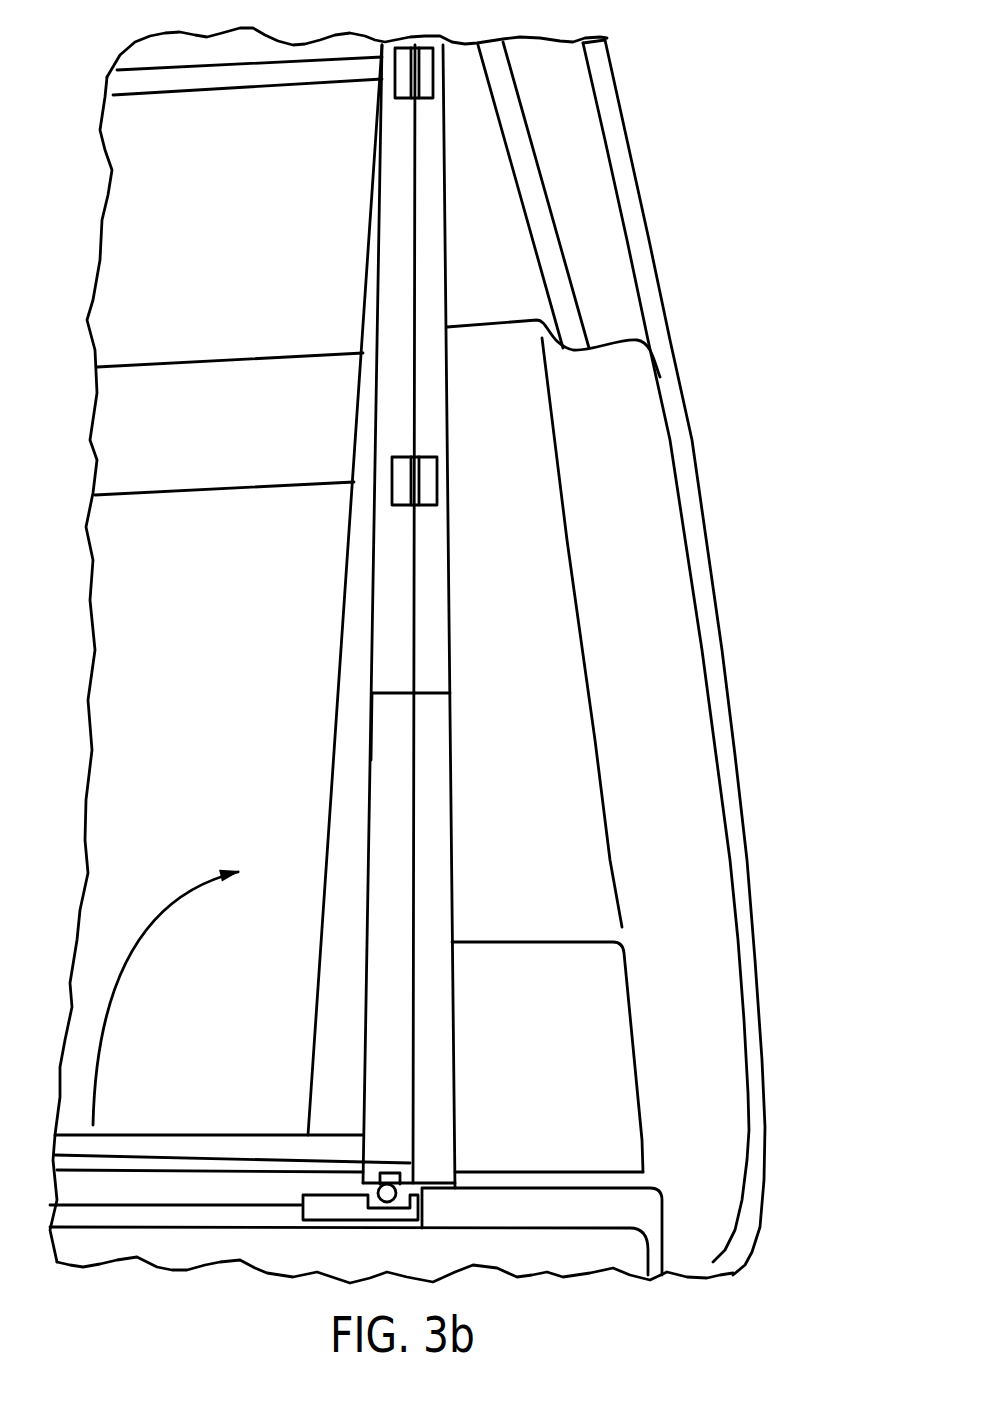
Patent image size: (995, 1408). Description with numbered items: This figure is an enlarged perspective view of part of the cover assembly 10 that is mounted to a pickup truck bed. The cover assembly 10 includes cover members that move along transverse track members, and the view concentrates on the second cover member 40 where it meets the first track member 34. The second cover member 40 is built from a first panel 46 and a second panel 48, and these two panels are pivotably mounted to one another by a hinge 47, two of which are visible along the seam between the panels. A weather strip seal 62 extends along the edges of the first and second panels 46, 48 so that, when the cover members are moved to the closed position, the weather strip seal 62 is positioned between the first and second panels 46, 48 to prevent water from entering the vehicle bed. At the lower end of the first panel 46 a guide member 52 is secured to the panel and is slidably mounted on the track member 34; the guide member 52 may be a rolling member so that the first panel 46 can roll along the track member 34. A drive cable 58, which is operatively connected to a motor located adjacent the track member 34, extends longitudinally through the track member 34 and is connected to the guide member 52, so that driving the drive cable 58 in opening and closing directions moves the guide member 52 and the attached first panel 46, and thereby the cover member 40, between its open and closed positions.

The cover assembly 10 is at (454, 413).
The first transverse track member 34 is at (160, 1140).
The second cover member 40 is at (450, 662).
The first panel 46 is at (388, 568).
The hinge 47 is at (427, 78).
The second panel 48 is at (432, 556).
The guide member 52 is at (362, 1133).
The drive cable 58 is at (267, 1205).
The weather strip seal 62 is at (450, 608).